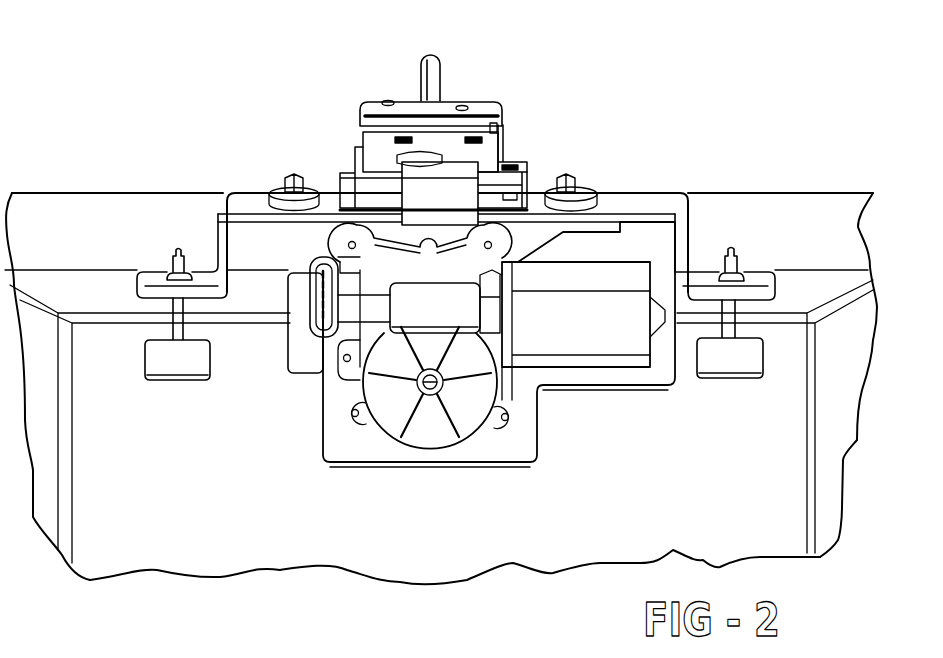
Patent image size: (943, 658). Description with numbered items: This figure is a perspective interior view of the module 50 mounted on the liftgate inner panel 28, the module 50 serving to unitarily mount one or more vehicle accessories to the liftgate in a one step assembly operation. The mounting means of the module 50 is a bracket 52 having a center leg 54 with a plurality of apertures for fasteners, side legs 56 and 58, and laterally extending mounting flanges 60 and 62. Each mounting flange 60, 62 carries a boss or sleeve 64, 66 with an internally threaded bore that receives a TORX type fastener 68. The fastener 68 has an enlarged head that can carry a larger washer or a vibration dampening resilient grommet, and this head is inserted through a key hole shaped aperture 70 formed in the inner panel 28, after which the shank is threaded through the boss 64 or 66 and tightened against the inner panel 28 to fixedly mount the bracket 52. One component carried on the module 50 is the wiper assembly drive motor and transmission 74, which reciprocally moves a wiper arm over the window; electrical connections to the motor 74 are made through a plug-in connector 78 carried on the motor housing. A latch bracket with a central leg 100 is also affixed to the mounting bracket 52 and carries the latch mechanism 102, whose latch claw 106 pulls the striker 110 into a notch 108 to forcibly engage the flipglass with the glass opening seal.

The liftgate inner panel 28 is at (833, 197).
The module 50 is at (518, 140).
The bracket 52 is at (631, 203).
The center leg 54 is at (668, 193).
The side leg 56 is at (692, 227).
The side leg 58 is at (220, 215).
The mounting flange 60 is at (772, 282).
The mounting flange 62 is at (147, 280).
The boss 64 is at (753, 273).
The boss 66 is at (154, 273).
The fastener 68 is at (182, 247).
The key hole shaped aperture 70 is at (150, 360).
The wiper assembly drive motor and transmission 74 is at (557, 343).
The plug-in connector 78 is at (313, 353).
The central leg 100 is at (442, 117).
The latch mechanism 102 is at (353, 143).
The latch claw 106 is at (422, 93).
The notch 108 is at (443, 100).
The striker 110 is at (438, 63).